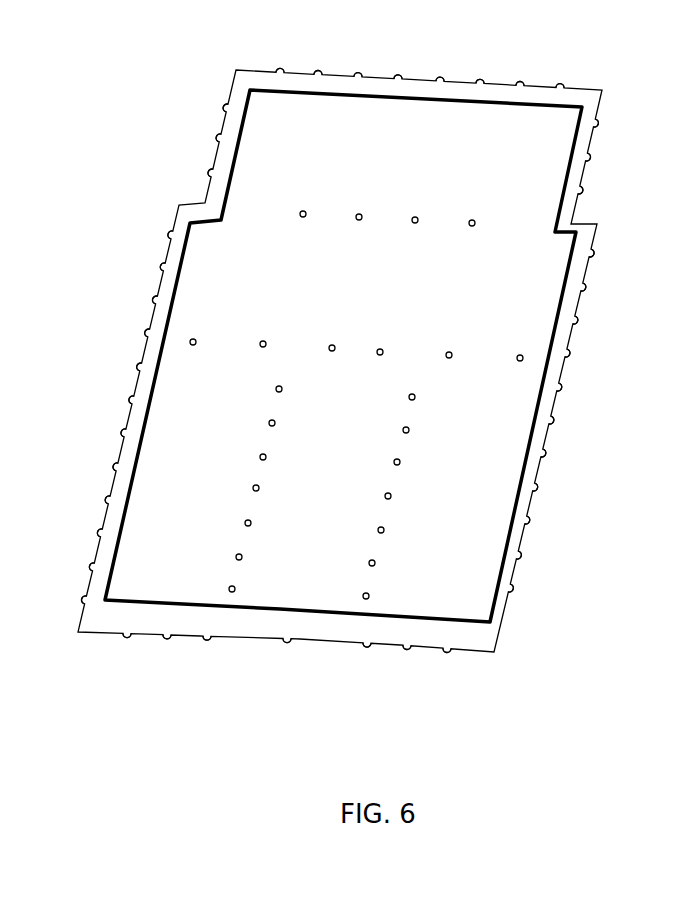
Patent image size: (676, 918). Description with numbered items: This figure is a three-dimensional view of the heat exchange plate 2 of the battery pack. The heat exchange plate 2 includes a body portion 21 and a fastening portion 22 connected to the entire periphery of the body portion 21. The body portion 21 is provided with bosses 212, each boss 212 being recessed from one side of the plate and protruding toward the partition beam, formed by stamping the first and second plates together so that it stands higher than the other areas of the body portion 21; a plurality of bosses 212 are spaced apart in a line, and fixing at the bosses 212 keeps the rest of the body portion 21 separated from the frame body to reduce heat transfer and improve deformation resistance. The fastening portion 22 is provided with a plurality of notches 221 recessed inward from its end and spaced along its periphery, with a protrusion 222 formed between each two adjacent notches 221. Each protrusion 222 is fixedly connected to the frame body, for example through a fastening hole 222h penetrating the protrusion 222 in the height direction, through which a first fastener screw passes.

The heat exchange plate 2 is at (34, 45).
The body portion 21 is at (258, 174).
The fastening portion 22 is at (172, 251).
The boss 212 is at (415, 215).
The notch 221 is at (264, 70).
The protrusion 222 is at (593, 253).
The fastening hole 222h is at (230, 102).